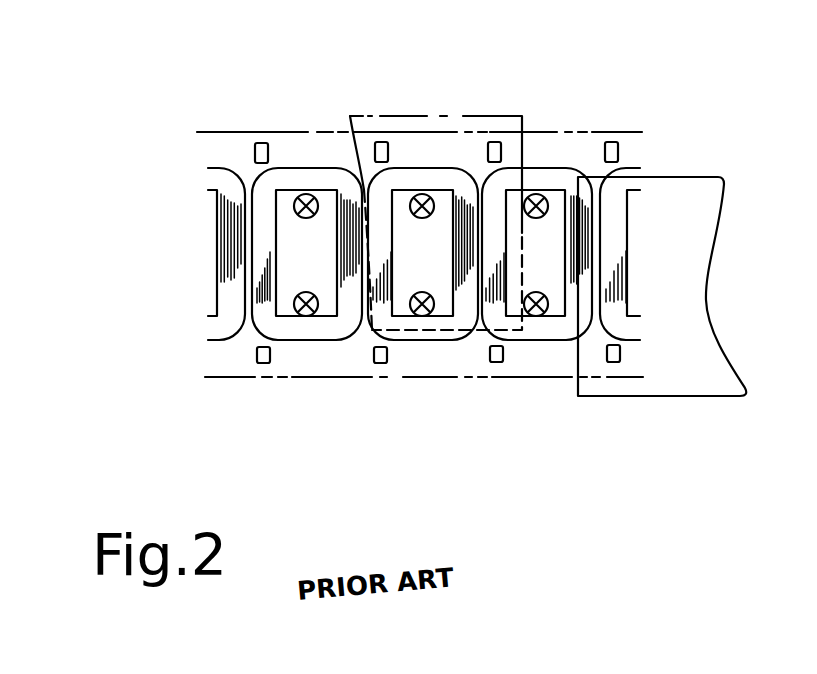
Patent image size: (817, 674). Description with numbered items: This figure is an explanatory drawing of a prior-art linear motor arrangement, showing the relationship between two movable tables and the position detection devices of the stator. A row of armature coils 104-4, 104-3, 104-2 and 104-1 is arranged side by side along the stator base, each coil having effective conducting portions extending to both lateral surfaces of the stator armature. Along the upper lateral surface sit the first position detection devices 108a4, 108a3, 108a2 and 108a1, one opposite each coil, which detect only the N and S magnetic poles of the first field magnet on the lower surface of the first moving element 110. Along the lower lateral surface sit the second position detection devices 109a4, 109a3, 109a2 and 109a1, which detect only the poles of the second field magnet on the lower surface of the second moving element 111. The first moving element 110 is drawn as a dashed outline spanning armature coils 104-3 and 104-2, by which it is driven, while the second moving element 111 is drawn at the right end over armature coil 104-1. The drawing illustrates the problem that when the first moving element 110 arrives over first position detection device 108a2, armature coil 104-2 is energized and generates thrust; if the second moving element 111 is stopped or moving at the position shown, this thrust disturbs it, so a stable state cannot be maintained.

The armature coil 104-1 is at (612, 228).
The armature coil 104-2 is at (492, 307).
The armature coil 104-3 is at (380, 310).
The armature coil 104-4 is at (258, 255).
The first position detection device 108a1 is at (612, 141).
The first position detection device 108a2 is at (494, 141).
The first position detection device 108a3 is at (381, 142).
The first position detection device 108a4 is at (260, 142).
The second position detection device 109a1 is at (618, 358).
The second position detection device 109a2 is at (502, 358).
The second position detection device 109a3 is at (386, 360).
The second position detection device 109a4 is at (268, 358).
The first moving element 110 is at (452, 113).
The second moving element 111 is at (703, 174).